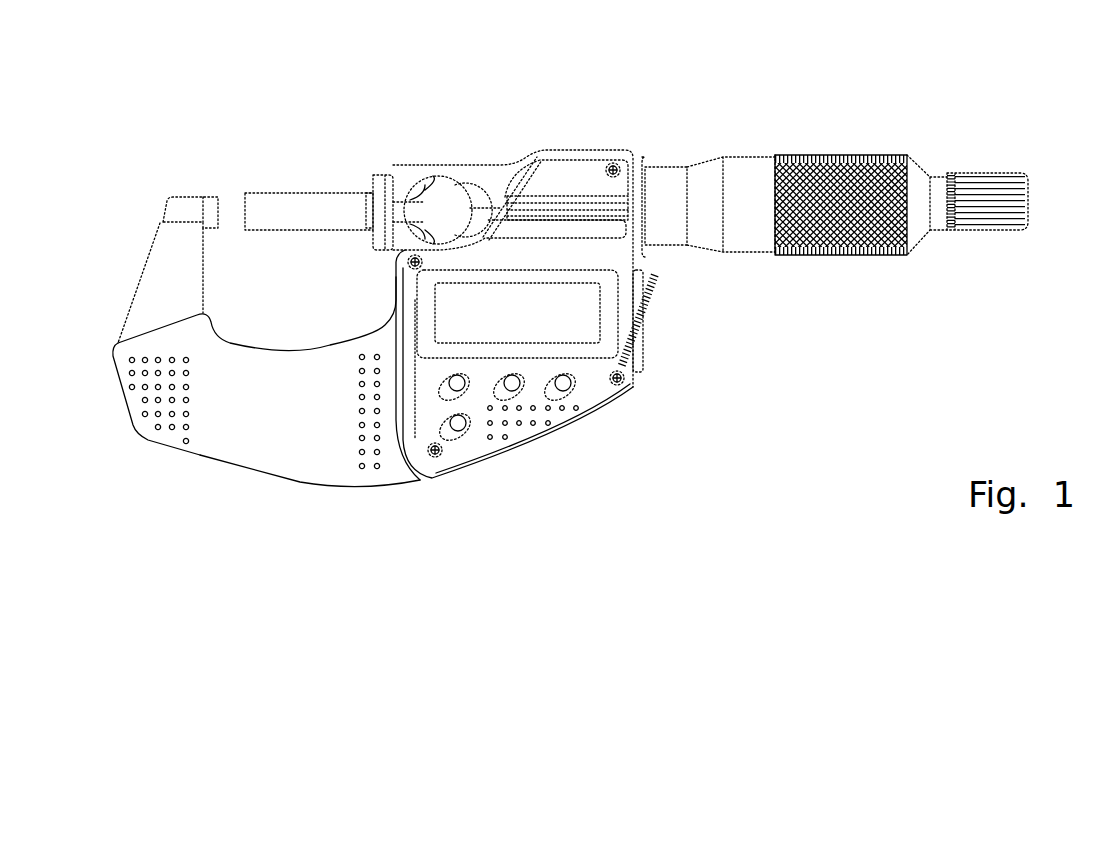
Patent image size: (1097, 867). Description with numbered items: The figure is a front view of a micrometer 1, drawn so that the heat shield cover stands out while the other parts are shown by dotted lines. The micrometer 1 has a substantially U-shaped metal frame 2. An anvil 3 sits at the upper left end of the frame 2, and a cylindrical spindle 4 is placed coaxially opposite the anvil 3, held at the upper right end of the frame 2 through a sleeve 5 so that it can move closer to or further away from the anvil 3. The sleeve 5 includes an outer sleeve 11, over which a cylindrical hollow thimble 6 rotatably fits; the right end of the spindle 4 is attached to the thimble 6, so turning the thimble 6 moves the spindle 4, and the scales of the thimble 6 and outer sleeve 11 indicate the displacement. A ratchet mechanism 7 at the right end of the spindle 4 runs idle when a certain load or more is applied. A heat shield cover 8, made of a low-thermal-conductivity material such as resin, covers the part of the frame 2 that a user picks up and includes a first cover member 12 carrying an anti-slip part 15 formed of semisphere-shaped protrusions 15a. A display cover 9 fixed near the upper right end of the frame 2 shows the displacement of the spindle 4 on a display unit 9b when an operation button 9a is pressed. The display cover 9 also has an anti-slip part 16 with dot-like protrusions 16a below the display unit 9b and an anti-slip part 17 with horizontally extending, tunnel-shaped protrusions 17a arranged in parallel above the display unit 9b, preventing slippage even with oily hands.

The micrometer 1 is at (916, 40).
The frame 2 is at (162, 262).
The anvil 3 is at (212, 208).
The spindle 4 is at (310, 208).
The sleeve 5 is at (657, 156).
The thimble 6 is at (815, 155).
The ratchet mechanism 7 is at (941, 159).
The heat shield cover 8 is at (220, 470).
The display cover 9 is at (528, 455).
The operation button 9a is at (460, 426).
The display unit 9b is at (590, 344).
The outer sleeve 11 is at (663, 235).
The first cover member 12 is at (305, 463).
The anti-slip part 15 is at (165, 435).
The protrusion 15a is at (145, 416).
The anti-slip part 16 is at (557, 416).
The dot-like protrusion 16a is at (492, 440).
The anti-slip part 17 is at (577, 198).
The protrusion 17a is at (537, 205).